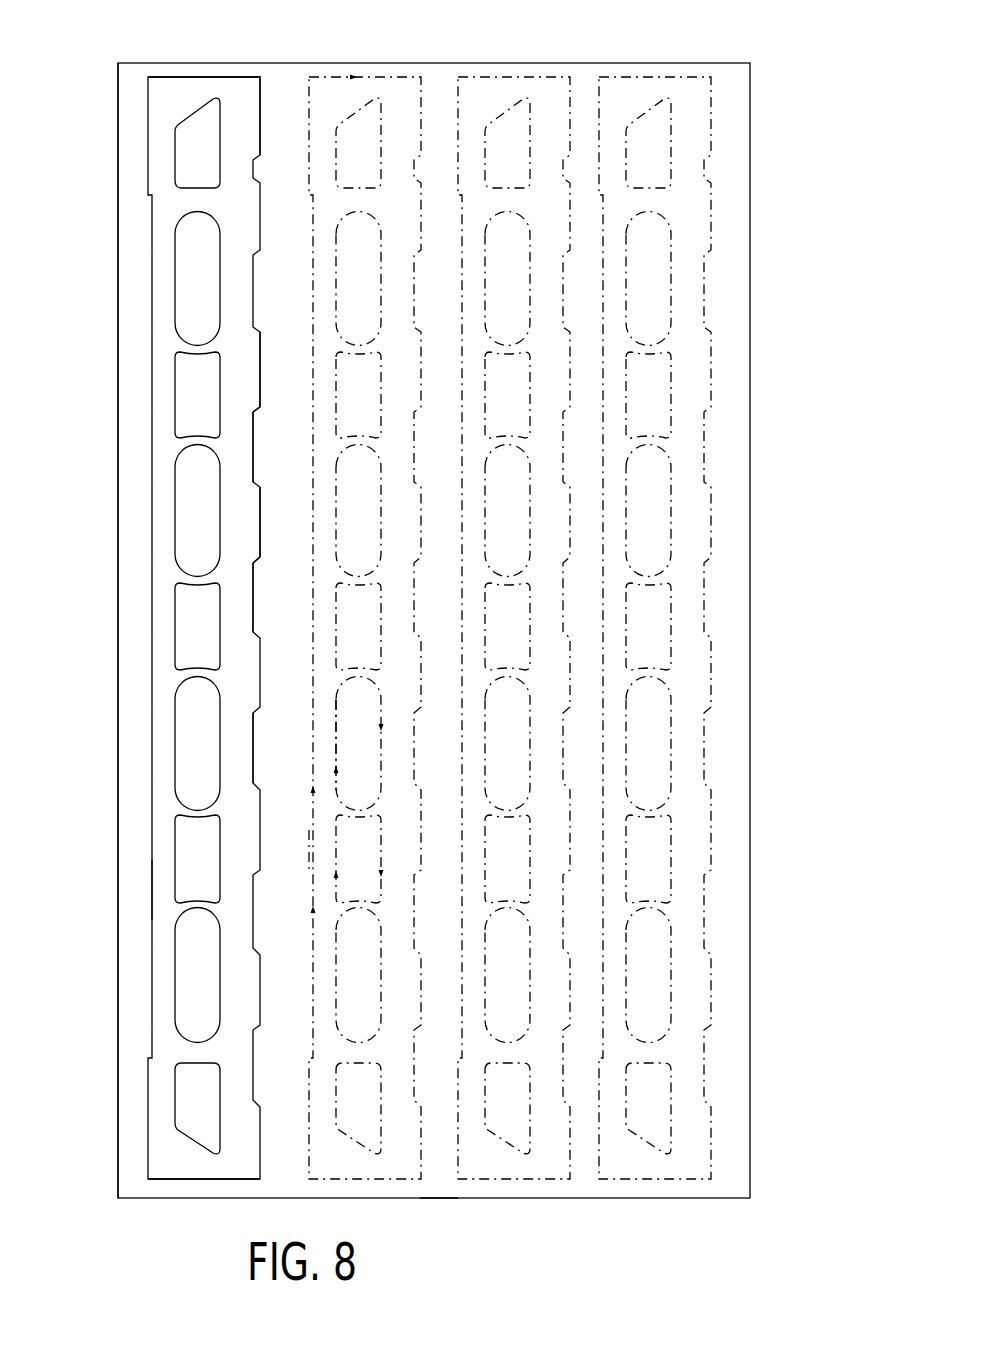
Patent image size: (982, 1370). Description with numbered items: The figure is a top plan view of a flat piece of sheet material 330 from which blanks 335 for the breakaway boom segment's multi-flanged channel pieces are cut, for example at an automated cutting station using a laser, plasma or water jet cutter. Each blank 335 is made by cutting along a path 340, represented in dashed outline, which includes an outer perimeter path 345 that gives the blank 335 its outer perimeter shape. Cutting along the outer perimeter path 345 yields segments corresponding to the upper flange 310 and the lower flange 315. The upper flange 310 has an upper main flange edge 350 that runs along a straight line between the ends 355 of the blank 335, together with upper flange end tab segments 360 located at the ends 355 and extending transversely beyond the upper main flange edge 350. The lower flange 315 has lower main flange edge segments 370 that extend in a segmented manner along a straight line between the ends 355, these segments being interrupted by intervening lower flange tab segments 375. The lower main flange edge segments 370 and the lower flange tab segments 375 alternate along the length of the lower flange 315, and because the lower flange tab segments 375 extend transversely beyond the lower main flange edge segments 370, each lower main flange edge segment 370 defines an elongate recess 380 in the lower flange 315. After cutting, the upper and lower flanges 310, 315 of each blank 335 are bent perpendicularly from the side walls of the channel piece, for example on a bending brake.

The upper flange 310 is at (149, 621).
The lower flange 315 is at (259, 748).
The sheet material 330 is at (724, 113).
The blank 335 is at (395, 600).
The path 340 is at (429, 1177).
The outer perimeter path 345 is at (311, 843).
The upper main flange edge 350 is at (152, 892).
The ends 355 is at (132, 105).
The upper flange end tab segments 360 is at (163, 152).
The lower main flange edge segments 370 is at (255, 477).
The lower flange tab segments 375 is at (262, 347).
The elongate recess 380 is at (258, 425).